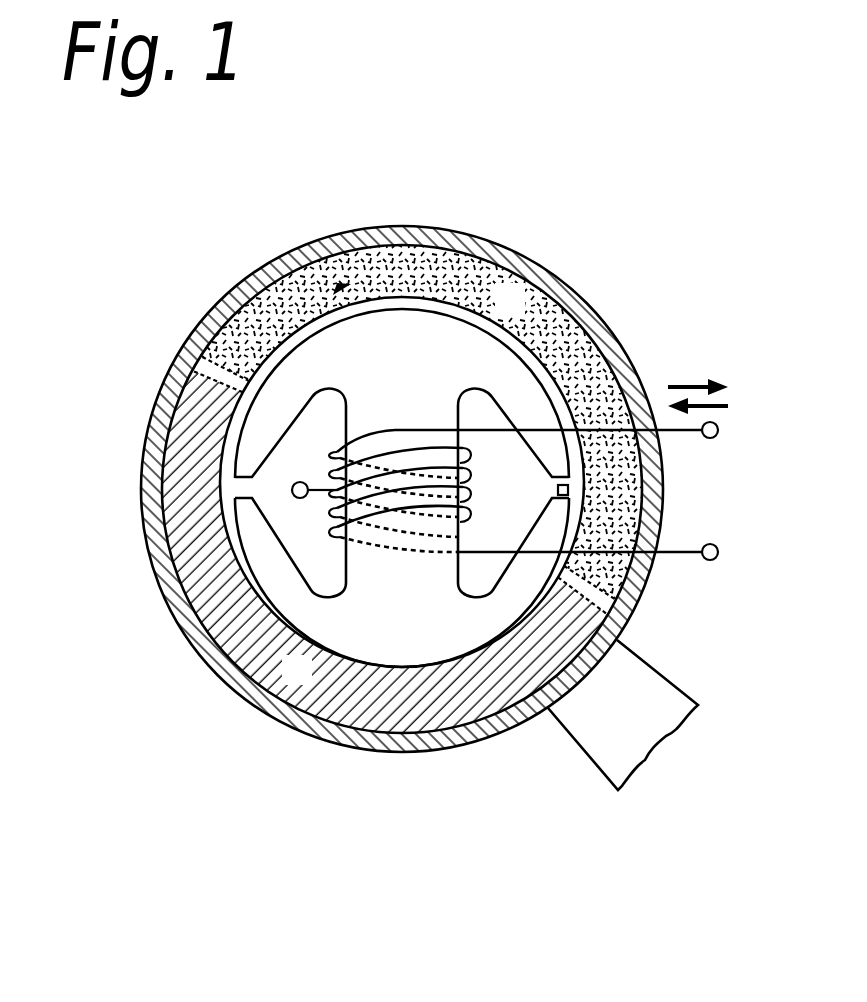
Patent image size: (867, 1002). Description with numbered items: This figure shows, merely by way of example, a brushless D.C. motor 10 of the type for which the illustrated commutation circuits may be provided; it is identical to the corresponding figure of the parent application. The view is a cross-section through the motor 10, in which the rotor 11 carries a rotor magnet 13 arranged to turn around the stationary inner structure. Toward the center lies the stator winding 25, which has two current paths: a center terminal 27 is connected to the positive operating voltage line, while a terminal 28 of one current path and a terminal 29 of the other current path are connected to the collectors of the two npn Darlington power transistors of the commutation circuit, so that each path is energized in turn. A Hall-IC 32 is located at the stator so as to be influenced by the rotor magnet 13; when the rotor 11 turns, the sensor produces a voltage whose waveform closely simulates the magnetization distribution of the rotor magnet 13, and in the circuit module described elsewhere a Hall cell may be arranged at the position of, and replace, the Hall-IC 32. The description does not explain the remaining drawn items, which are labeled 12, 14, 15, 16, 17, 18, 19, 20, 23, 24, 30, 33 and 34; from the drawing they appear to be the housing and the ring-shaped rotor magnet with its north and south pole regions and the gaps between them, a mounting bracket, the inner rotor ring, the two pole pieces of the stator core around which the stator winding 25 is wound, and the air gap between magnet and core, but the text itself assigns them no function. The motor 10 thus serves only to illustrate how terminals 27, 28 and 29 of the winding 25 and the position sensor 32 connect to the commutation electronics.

The motor 10 is at (167, 222).
The rotor 11 is at (636, 322).
The housing 12 is at (584, 308).
The rotor magnet 13 is at (607, 368).
The first pole gap 14 is at (197, 358).
The second pole gap 15 is at (618, 606).
The south pole portion 16 is at (269, 268).
The mounting bracket 17 is at (673, 697).
The rotor 18 is at (391, 367).
The rotor ring 19 is at (442, 338).
The inner ring 20 is at (433, 628).
The first pole piece 23 is at (338, 578).
The second pole piece 24 is at (473, 578).
The stator winding 25 is at (418, 447).
The center terminal 27 is at (302, 499).
The terminal 28 is at (718, 430).
The terminal 29 is at (718, 552).
The magnet south pole 30 is at (231, 326).
The Hall-IC 32 is at (558, 491).
The air gap 33 is at (397, 305).
The magnet north pole 34 is at (367, 657).